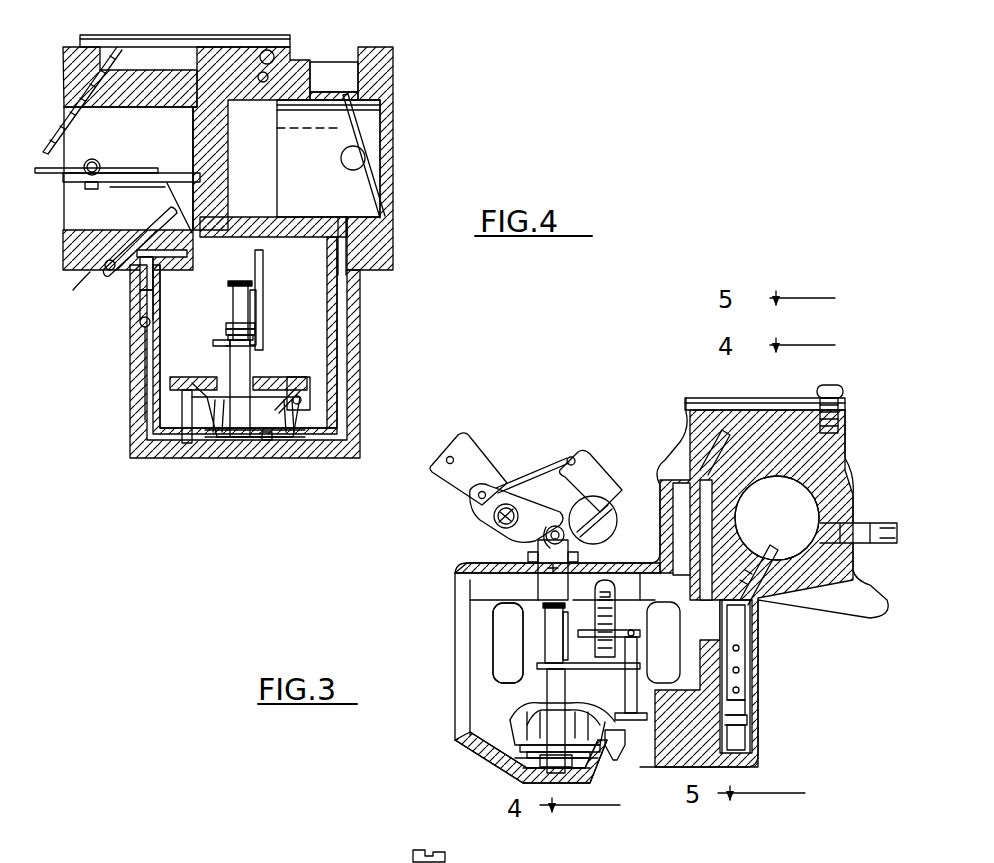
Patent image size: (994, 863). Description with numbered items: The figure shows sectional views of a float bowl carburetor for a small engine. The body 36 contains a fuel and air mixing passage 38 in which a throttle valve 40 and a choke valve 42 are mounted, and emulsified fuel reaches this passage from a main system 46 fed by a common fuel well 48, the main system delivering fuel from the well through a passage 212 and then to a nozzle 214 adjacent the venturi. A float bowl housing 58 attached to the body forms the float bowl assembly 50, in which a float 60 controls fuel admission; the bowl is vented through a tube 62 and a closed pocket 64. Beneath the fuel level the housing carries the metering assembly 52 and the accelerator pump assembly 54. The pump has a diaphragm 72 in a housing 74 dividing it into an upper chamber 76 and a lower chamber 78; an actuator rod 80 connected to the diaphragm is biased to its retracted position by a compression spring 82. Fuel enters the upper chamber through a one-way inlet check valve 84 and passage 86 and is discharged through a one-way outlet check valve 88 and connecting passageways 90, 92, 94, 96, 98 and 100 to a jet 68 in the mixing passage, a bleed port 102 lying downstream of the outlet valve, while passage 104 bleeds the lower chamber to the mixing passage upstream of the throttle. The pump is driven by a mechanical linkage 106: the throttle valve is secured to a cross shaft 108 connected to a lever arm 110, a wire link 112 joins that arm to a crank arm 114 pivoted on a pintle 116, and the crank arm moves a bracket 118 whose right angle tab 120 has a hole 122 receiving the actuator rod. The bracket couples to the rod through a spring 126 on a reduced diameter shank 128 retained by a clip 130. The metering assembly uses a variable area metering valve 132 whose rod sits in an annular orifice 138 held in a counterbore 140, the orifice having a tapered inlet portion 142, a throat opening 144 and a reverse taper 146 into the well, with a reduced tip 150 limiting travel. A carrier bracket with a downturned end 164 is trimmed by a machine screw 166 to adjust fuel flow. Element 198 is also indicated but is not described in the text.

In FIG. 4, the body 36 is at (393, 250).
In FIG. 3, the body 36 is at (462, 560).
In FIG. 4, the fuel and air mixing passage 38 is at (128, 147).
In FIG. 3, the fuel and air mixing passage 38 is at (800, 507).
In FIG. 4, the throttle valve 40 is at (362, 128).
In FIG. 4, the choke valve 42 is at (53, 178).
In FIG. 3, the main system 46 is at (732, 657).
In FIG. 3, the fuel well 48 is at (613, 760).
In FIG. 4, the float bowl assembly 50 is at (312, 317).
In FIG. 3, the float bowl assembly 50 is at (507, 708).
In FIG. 3, the metering assembly 52 is at (620, 714).
In FIG. 3, the accelerator pump assembly 54 is at (527, 725).
In FIG. 4, the float bowl housing 58 is at (358, 408).
In FIG. 3, the float bowl housing 58 is at (460, 618).
In FIG. 3, the float 60 is at (495, 680).
In FIG. 4, the tube 62 is at (52, 98).
In FIG. 4, the closed pocket 64 is at (188, 52).
In FIG. 3, the closed pocket 64 is at (710, 417).
In FIG. 4, the jet 68 is at (158, 214).
In FIG. 3, the diaphragm 72 is at (527, 767).
In FIG. 3, the housing 74 is at (527, 740).
In FIG. 4, the upper chamber 76 is at (273, 433).
In FIG. 3, the upper chamber 76 is at (527, 760).
In FIG. 4, the lower chamber 78 is at (250, 447).
In FIG. 3, the lower chamber 78 is at (520, 783).
In FIG. 4, the actuator rod 80 is at (263, 353).
In FIG. 3, the compression spring 82 is at (567, 767).
In FIG. 4, the one-way inlet check valve 84 is at (313, 387).
In FIG. 4, the passage 86 is at (270, 383).
In FIG. 4, the one-way outlet check valve 88 is at (140, 322).
In FIG. 4, the connecting passageway 90 is at (187, 430).
In FIG. 4, the connecting passageway 92 is at (163, 453).
In FIG. 4, the connecting passageway 94 is at (197, 400).
In FIG. 4, the connecting passageway 96 is at (122, 285).
In FIG. 4, the connecting passageway 98 is at (128, 255).
In FIG. 4, the connecting passageway 100 is at (128, 262).
In FIG. 4, the bleed port 102 is at (200, 265).
In FIG. 4, the passage 104 is at (343, 337).
In FIG. 3, the mechanical linkage 106 is at (472, 438).
In FIG. 3, the cross shaft 108 is at (492, 520).
In FIG. 3, the lever arm 110 is at (512, 494).
In FIG. 3, the wire link 112 is at (517, 475).
In FIG. 3, the crank arm 114 is at (596, 458).
In FIG. 3, the pintle 116 is at (613, 510).
In FIG. 4, the bracket 118 is at (264, 262).
In FIG. 3, the bracket 118 is at (537, 580).
In FIG. 4, the right angle tab 120 is at (214, 343).
In FIG. 4, the hole 122 is at (228, 348).
In FIG. 4, the spring 126 is at (229, 328).
In FIG. 3, the spring 126 is at (540, 650).
In FIG. 4, the reduced diameter shank 128 is at (258, 297).
In FIG. 3, the reduced diameter shank 128 is at (545, 627).
In FIG. 4, the clip 130 is at (230, 281).
In FIG. 3, the clip 130 is at (547, 612).
In FIG. 3, the variable area metering valve 132 is at (727, 672).
In FIG. 3, the annular orifice 138 is at (748, 723).
In FIG. 3, the counterbore 140 is at (590, 770).
In FIG. 3, the tapered inlet portion 142 is at (735, 692).
In FIG. 3, the throat opening 144 is at (660, 773).
In FIG. 3, the reverse taper 146 is at (650, 780).
In FIG. 3, the tip 150 is at (637, 773).
In FIG. 3, the downturned end 164 is at (487, 690).
In FIG. 3, the machine screw 166 is at (613, 597).
In FIG. 3, the bracket 198 is at (415, 853).
In FIG. 3, the passage 212 is at (738, 735).
In FIG. 3, the nozzle 214 is at (763, 537).